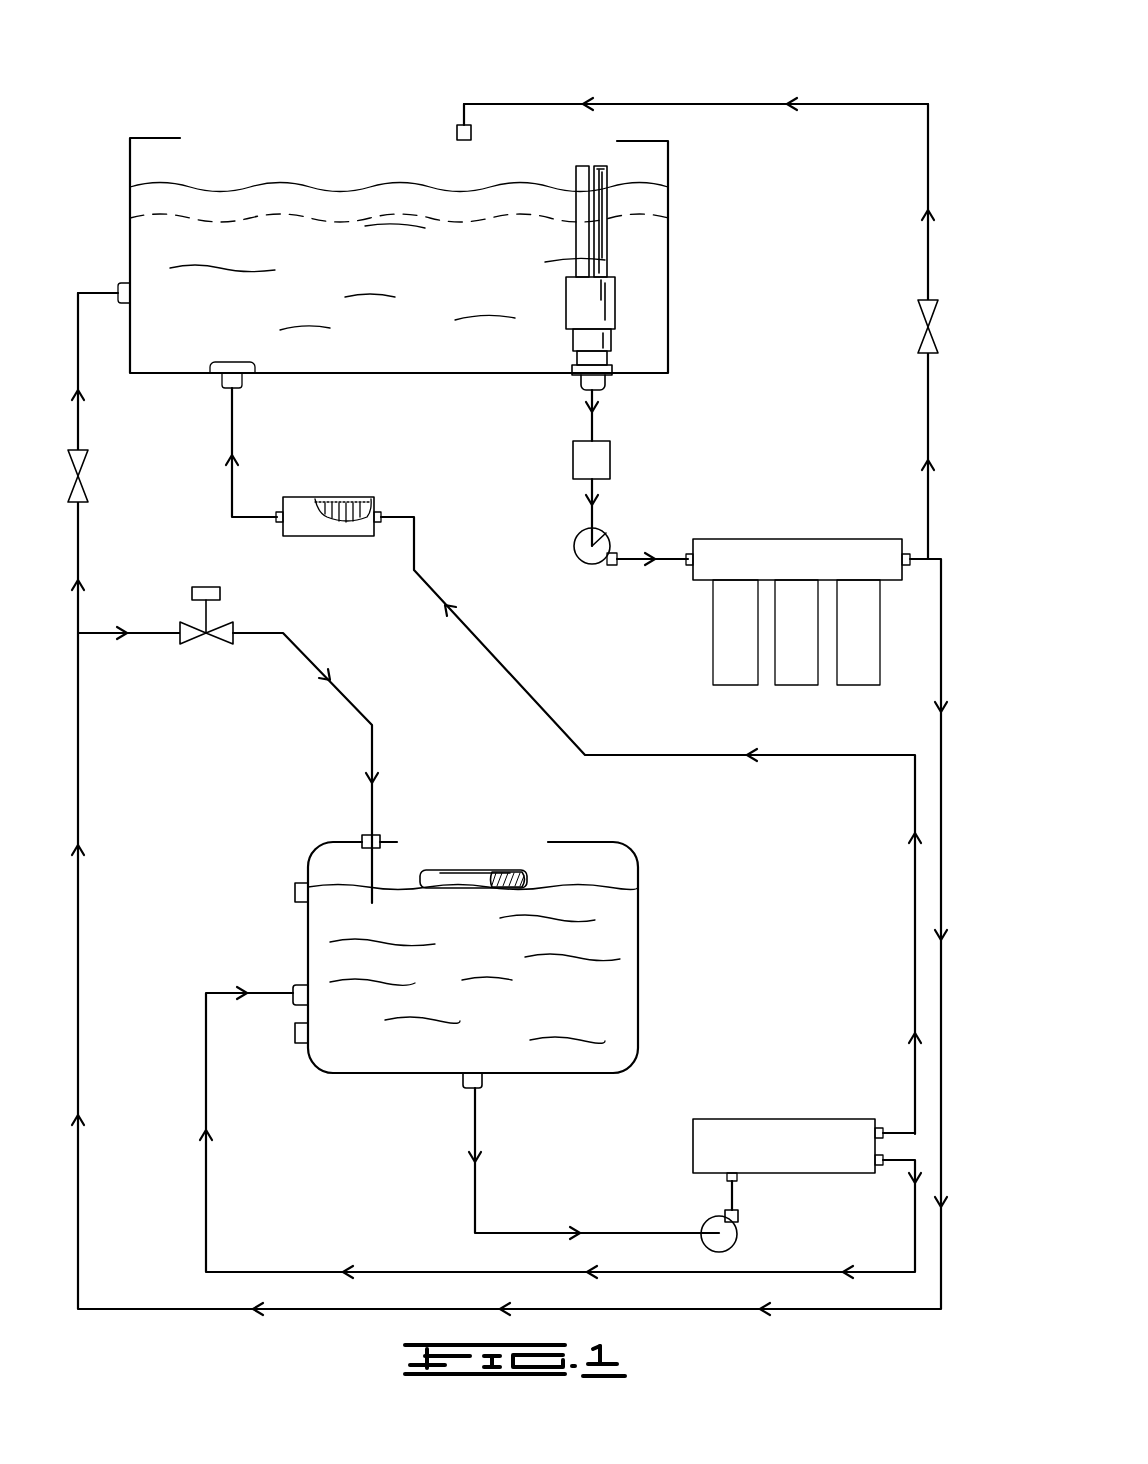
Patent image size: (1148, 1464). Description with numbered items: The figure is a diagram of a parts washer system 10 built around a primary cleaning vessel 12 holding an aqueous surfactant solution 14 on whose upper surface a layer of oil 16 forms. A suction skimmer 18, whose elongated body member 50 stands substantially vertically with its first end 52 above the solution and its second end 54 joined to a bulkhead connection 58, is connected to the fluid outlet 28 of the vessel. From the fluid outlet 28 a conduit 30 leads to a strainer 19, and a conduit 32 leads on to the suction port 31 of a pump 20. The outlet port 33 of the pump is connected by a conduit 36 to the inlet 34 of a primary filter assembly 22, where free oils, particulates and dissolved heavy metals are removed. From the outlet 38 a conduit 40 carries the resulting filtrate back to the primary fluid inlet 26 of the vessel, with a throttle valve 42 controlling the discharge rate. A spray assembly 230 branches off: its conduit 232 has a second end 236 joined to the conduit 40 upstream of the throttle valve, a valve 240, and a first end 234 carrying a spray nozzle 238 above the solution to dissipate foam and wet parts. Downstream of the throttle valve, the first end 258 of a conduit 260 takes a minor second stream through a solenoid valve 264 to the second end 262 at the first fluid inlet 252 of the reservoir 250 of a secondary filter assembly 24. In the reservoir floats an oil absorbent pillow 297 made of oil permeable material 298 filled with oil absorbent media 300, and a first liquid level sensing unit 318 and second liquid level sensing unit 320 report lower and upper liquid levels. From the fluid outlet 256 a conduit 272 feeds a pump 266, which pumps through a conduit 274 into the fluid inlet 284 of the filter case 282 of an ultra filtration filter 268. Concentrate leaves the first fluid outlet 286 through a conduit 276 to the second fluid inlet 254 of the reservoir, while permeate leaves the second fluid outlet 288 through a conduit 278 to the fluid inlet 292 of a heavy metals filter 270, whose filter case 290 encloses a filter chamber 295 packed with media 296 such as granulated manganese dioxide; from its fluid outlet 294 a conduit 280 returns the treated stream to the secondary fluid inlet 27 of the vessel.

The parts washer system 10 is at (893, 57).
The primary cleaning vessel 12 is at (122, 140).
The aqueous surfactant solution 14 is at (380, 277).
The layer of oil 16 is at (135, 204).
The suction skimmer 18 is at (574, 274).
The strainer 19 is at (572, 462).
The pump 20 is at (597, 553).
The primary filter assembly 22 is at (805, 568).
The secondary filter assembly 24 is at (483, 965).
The primary fluid inlet 26 is at (134, 296).
The secondary fluid inlet 27 is at (232, 362).
The fluid outlet 28 is at (574, 360).
The conduit 30 is at (595, 430).
The suction port 31 is at (606, 533).
The conduit 32 is at (584, 527).
The outlet port 33 is at (622, 557).
The inlet 34 is at (688, 548).
The conduit 36 is at (667, 566).
The outlet 38 is at (907, 568).
The conduit 40 is at (937, 742).
The throttle valve 42 is at (93, 457).
The elongated body member 50 is at (608, 242).
The first end 52 is at (606, 176).
The second end 54 is at (612, 348).
The bulkhead connection 58 is at (612, 370).
The spray assembly 230 is at (705, 85).
The conduit 232 is at (661, 312).
The first end 234 is at (458, 110).
The second end 236 is at (926, 486).
The spray nozzle 238 is at (446, 140).
The valve 240 is at (914, 309).
The reservoir 250 is at (645, 960).
The first fluid inlet 252 is at (363, 835).
The second fluid inlet 254 is at (297, 982).
The fluid outlet 256 is at (485, 1083).
The first end 258 is at (95, 637).
The conduit 260 is at (219, 601).
The second end 262 is at (375, 763).
The solenoid valve 264 is at (190, 589).
The pump 266 is at (730, 1246).
The ultra filtration filter 268 is at (777, 1136).
The heavy metals filter 270 is at (339, 521).
The conduit 272 is at (493, 1230).
The conduit 274 is at (740, 1194).
The conduit 276 is at (908, 1251).
The conduit 278 is at (520, 678).
The conduit 280 is at (236, 434).
The filter case 282 is at (812, 1158).
The fluid inlet 284 is at (728, 1180).
The first fluid outlet 286 is at (885, 1166).
The second fluid outlet 288 is at (883, 1128).
The filter case 290 is at (318, 537).
The fluid inlet 292 is at (384, 515).
The fluid outlet 294 is at (276, 527).
The filter chamber 295 is at (365, 498).
The media 296 is at (346, 518).
The oil absorbent pillow 297 is at (507, 847).
The oil permeable material 298 is at (470, 875).
The oil absorbent media 300 is at (535, 872).
The first liquid level sensing unit 318 is at (295, 1043).
The second liquid level sensing unit 320 is at (292, 884).